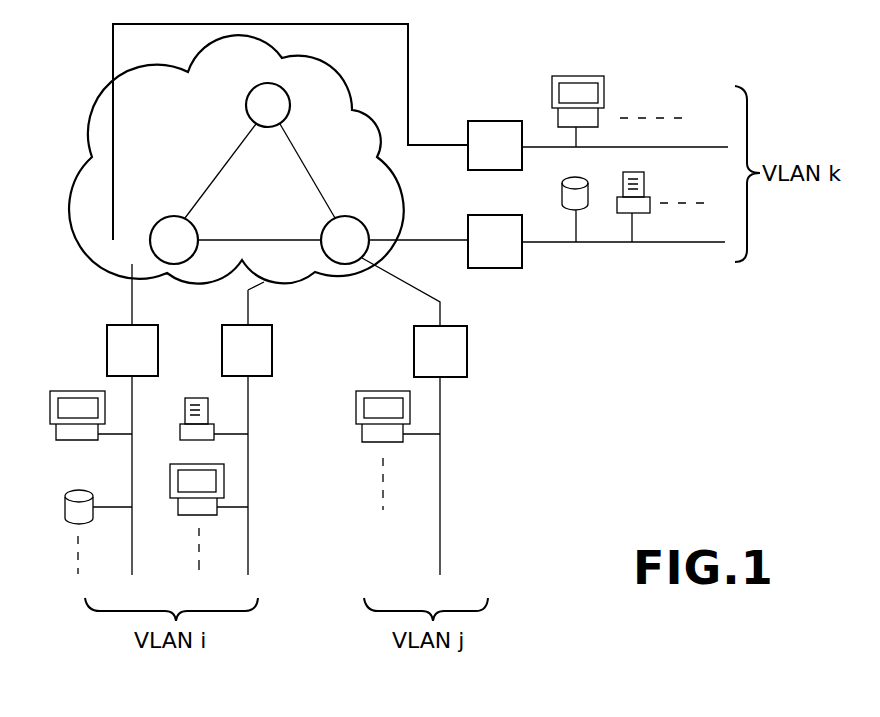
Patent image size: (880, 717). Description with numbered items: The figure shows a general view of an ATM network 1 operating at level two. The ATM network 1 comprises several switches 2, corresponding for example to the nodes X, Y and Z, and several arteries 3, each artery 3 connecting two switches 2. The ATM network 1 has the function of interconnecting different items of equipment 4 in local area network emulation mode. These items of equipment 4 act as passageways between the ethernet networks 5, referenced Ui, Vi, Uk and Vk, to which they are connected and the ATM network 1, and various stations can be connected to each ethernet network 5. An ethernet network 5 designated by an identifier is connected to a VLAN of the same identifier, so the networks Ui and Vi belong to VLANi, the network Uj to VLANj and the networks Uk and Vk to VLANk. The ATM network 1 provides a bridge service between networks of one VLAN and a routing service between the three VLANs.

The ATM network 1 is at (92, 145).
The switch 2 is at (247, 100).
The artery 3 is at (229, 157).
The item of equipment 4 is at (496, 121).
The ethernet network 5 is at (716, 147).